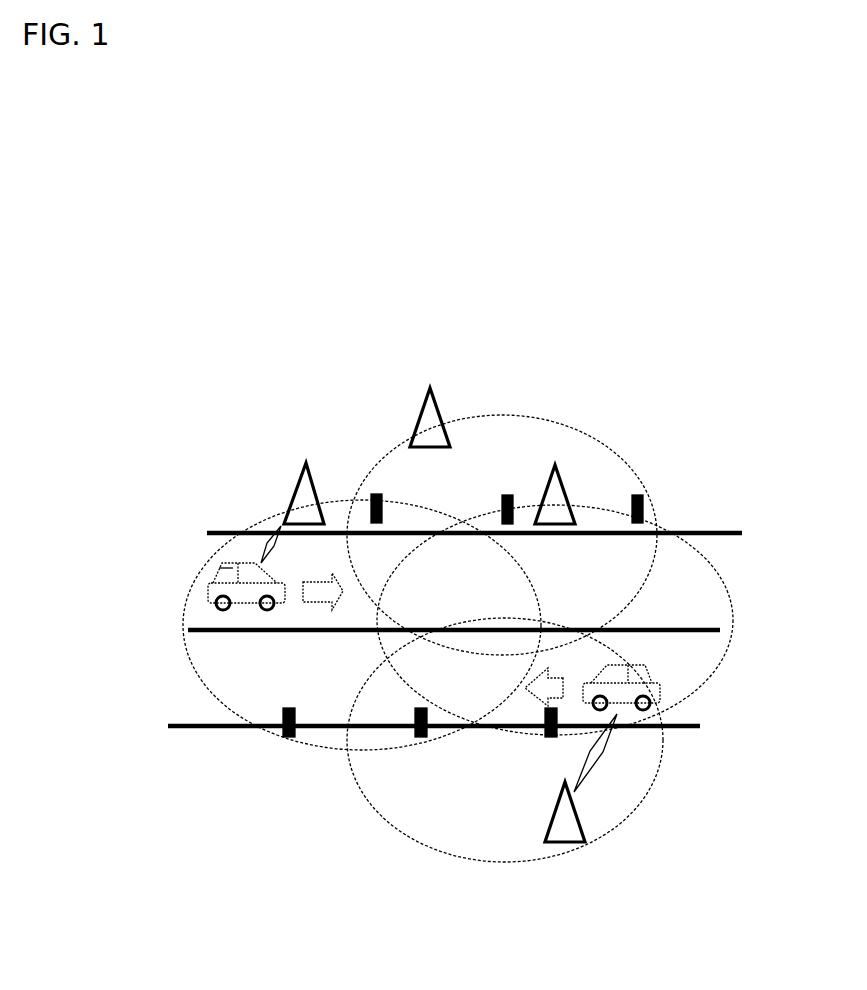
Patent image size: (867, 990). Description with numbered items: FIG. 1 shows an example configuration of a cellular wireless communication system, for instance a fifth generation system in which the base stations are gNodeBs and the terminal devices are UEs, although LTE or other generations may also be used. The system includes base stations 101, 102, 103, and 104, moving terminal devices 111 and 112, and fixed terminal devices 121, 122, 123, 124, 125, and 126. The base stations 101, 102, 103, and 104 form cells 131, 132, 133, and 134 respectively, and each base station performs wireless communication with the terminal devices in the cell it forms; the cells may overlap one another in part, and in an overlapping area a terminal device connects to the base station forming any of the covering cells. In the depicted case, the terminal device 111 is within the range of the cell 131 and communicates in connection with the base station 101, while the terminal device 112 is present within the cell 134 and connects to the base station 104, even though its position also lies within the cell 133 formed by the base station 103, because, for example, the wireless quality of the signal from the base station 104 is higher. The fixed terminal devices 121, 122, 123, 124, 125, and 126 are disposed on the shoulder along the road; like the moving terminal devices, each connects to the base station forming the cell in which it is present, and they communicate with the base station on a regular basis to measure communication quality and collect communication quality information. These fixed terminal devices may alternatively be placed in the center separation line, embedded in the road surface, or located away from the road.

The base station 101 is at (305, 492).
The base station 102 is at (425, 422).
The base station 103 is at (572, 500).
The base station 104 is at (566, 845).
The terminal device 111 is at (212, 590).
The terminal device 112 is at (662, 690).
The fixed terminal device 121 is at (374, 498).
The fixed terminal device 122 is at (508, 494).
The fixed terminal device 123 is at (645, 516).
The fixed terminal device 124 is at (290, 738).
The fixed terminal device 125 is at (421, 738).
The fixed terminal device 126 is at (545, 732).
The cell 131 is at (185, 640).
The cell 132 is at (615, 420).
The cell 133 is at (730, 600).
The cell 134 is at (400, 830).